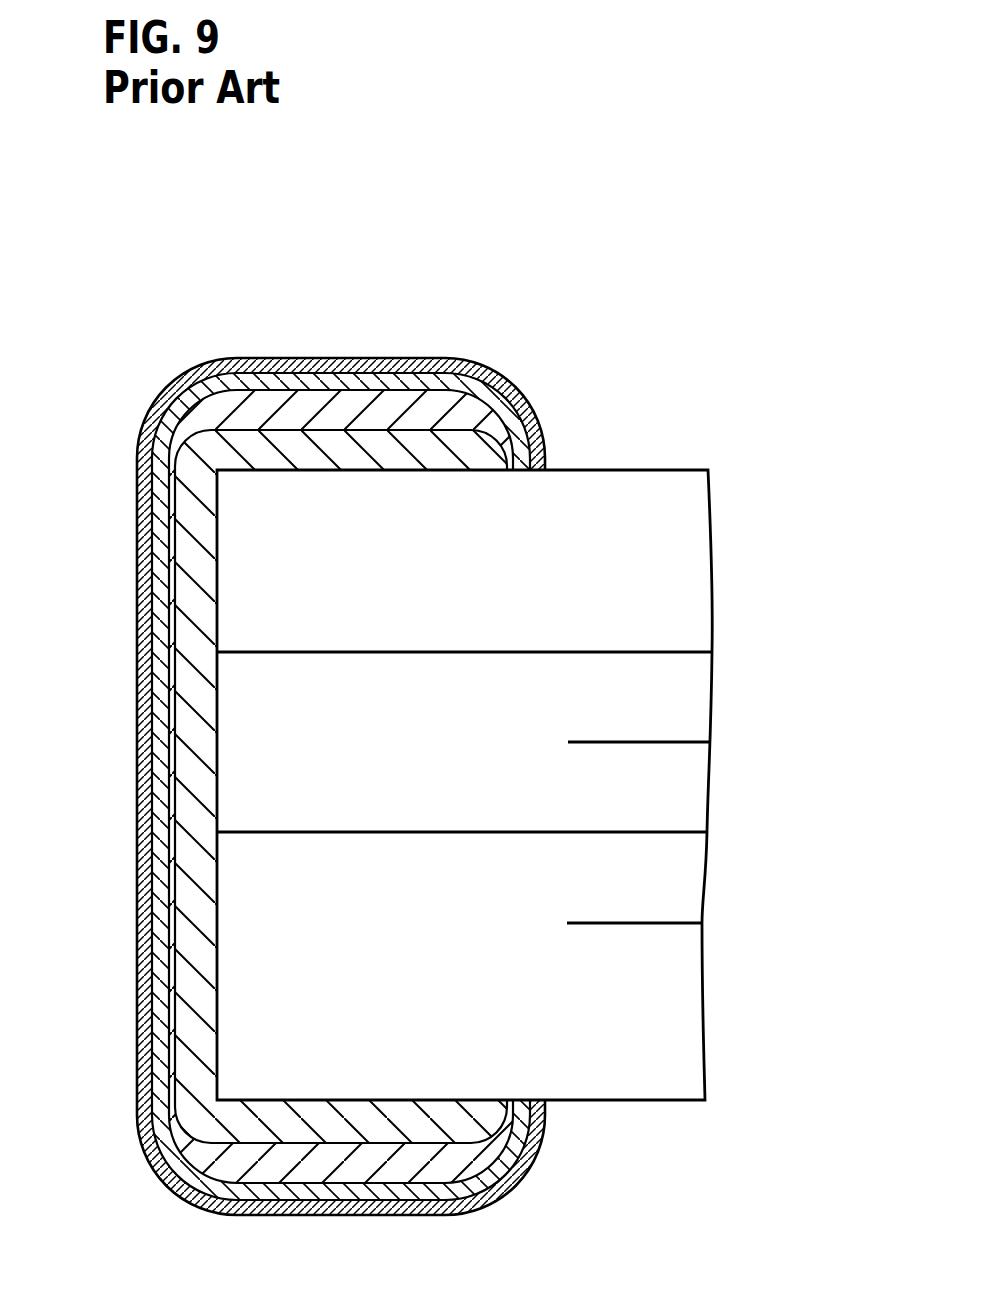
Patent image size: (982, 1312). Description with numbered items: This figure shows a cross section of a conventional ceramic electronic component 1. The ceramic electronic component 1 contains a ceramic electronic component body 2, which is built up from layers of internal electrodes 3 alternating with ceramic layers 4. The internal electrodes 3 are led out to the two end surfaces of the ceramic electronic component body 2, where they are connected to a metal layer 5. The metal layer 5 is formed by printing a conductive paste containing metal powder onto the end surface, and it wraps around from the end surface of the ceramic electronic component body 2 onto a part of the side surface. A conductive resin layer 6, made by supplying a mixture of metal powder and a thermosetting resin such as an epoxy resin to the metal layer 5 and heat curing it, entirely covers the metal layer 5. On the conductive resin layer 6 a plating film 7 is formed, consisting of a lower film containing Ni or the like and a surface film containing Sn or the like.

The ceramic electronic component 1 is at (81, 269).
The ceramic electronic component body 2 is at (642, 470).
The internal electrodes 3 is at (665, 650).
The ceramic layers 4 is at (665, 785).
The metal layer 5 is at (195, 718).
The conductive resin layer 6 is at (297, 405).
The plating film 7 is at (140, 909).